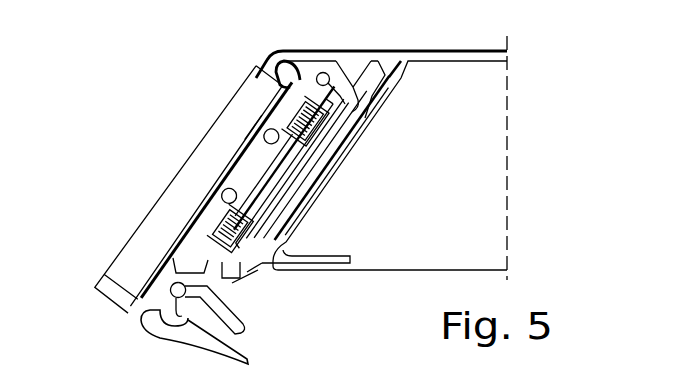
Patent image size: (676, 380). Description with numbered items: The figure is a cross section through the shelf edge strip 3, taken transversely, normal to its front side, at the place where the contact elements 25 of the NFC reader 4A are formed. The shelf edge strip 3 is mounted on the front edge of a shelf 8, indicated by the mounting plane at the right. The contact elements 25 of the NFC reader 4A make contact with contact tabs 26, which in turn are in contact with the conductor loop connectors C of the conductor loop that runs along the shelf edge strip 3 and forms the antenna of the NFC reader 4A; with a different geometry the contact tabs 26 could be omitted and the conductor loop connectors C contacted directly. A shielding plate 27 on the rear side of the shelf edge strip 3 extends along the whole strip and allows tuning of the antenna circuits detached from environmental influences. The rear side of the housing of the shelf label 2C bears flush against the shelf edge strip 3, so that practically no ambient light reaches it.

The shelf edge strip 3 is at (288, 51).
The contact tabs 26 is at (275, 107).
The conductor loop connectors C is at (255, 124).
The shelf label 2C is at (152, 238).
The contact elements 25 is at (328, 147).
The shielding plate 27 is at (318, 182).
The NFC reader 4A is at (257, 266).
The shelf 8 is at (498, 129).